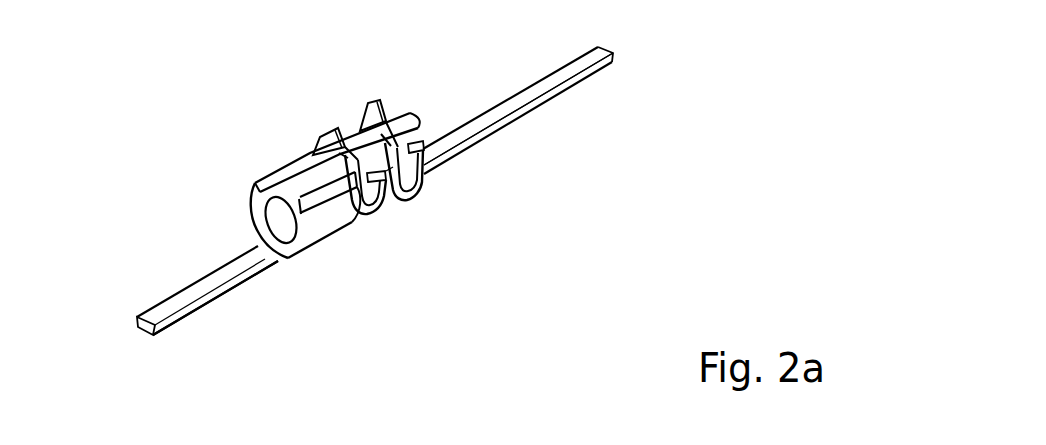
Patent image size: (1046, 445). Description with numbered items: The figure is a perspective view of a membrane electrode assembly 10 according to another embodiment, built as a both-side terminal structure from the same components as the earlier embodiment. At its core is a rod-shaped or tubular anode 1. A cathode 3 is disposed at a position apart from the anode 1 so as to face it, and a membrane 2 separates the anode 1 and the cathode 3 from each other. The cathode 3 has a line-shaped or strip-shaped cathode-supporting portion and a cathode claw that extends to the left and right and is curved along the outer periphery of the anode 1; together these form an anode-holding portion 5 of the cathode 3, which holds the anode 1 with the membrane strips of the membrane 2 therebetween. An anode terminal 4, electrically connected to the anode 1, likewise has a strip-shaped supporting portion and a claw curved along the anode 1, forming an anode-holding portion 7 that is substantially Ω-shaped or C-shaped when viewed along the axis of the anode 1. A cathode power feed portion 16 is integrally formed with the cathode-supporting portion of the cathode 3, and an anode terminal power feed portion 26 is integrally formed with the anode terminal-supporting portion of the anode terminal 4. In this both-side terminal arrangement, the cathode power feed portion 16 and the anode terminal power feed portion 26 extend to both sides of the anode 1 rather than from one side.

The membrane electrode assembly 10 is at (691, 31).
The anode 1 is at (311, 186).
The membrane 2 is at (353, 136).
The cathode 3 is at (510, 92).
The anode terminal 4 is at (218, 260).
The anode-holding portion 5 is at (422, 192).
The anode-holding portion 7 is at (345, 232).
The cathode power feed portion 16 is at (586, 82).
The anode terminal power feed portion 26 is at (201, 307).